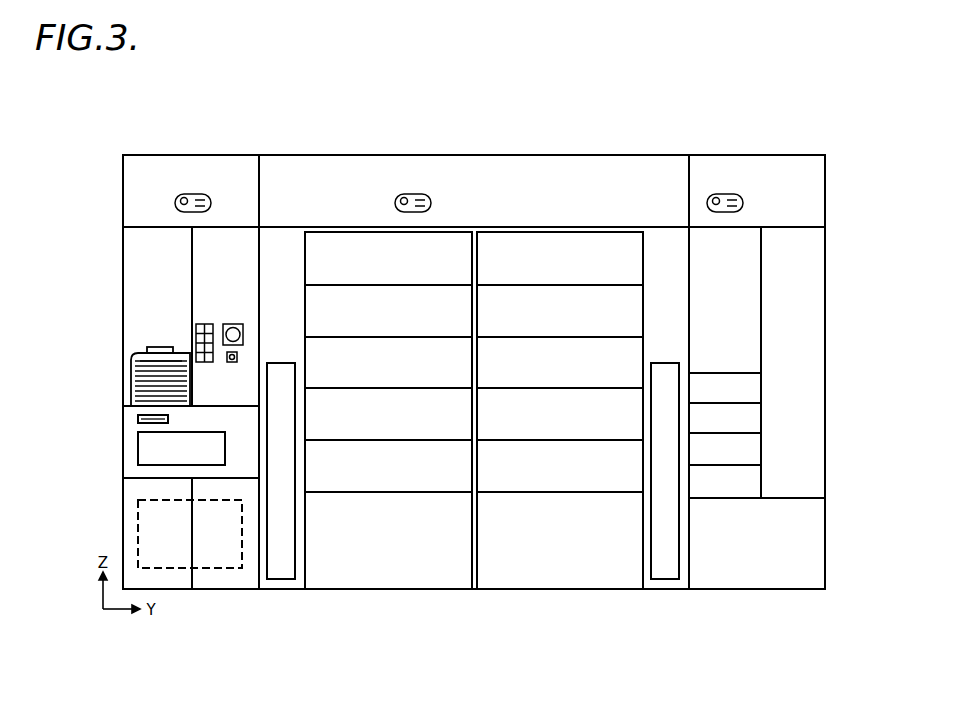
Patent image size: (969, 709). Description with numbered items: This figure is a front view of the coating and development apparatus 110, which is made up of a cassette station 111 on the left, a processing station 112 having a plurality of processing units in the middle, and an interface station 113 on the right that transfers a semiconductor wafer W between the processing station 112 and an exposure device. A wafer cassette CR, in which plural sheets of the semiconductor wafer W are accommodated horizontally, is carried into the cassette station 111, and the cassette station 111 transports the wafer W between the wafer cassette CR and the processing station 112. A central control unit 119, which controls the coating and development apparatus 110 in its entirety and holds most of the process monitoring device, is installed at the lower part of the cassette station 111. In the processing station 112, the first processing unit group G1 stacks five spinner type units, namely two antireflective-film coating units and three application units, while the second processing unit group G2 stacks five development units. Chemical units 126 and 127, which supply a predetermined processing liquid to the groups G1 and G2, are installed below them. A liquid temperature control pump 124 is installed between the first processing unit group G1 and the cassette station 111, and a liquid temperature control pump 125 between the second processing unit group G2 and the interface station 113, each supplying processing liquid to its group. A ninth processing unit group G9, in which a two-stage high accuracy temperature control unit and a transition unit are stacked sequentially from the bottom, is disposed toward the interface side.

The coating and development apparatus 110 is at (782, 125).
The cassette station 111 is at (177, 620).
The processing station 112 is at (482, 620).
The interface station 113 is at (770, 620).
The central control unit 119 is at (225, 568).
The liquid temperature control pump 124 is at (280, 579).
The liquid temperature control pump 125 is at (665, 579).
The chemical unit 126 is at (388, 582).
The chemical unit 127 is at (556, 582).
The first processing unit group G1 is at (360, 215).
The second processing unit group G2 is at (558, 215).
The ninth processing unit group G9 is at (712, 365).
The wafer cassette CR is at (160, 349).
The semiconductor wafer W is at (142, 357).